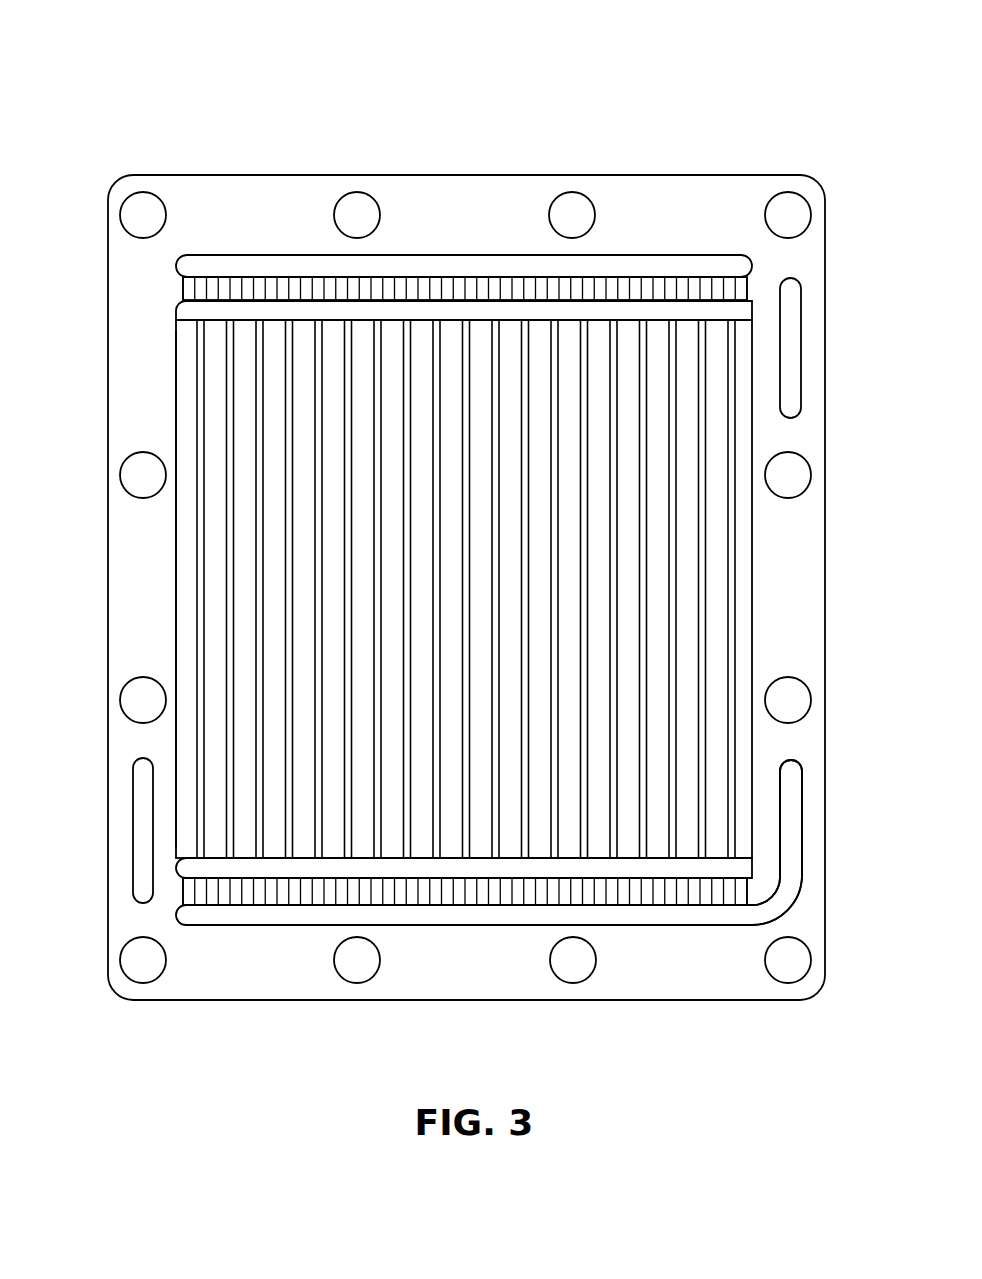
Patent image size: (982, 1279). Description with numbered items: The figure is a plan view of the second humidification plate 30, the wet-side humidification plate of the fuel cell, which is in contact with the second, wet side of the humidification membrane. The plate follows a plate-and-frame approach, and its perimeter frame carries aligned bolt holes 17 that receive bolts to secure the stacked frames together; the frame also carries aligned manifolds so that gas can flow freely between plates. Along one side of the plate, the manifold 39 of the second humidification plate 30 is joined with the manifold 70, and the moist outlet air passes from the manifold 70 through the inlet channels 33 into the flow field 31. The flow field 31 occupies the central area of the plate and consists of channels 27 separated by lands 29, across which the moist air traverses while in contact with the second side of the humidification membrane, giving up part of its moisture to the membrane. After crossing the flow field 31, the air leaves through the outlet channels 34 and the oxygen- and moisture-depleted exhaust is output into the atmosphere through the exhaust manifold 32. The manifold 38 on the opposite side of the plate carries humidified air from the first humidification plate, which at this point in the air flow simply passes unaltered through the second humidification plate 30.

The second humidification plate 30 is at (484, 50).
The bolt holes 17 is at (145, 196).
The flow field 31 is at (228, 385).
The channels 27 is at (187, 405).
The lands 29 is at (200, 425).
The exhaust manifold 32 is at (263, 256).
The inlet channels 33 is at (452, 897).
The outlet channels 34 is at (477, 282).
The manifold 38 is at (802, 302).
The manifold 39 is at (802, 803).
The manifold 70 is at (700, 920).